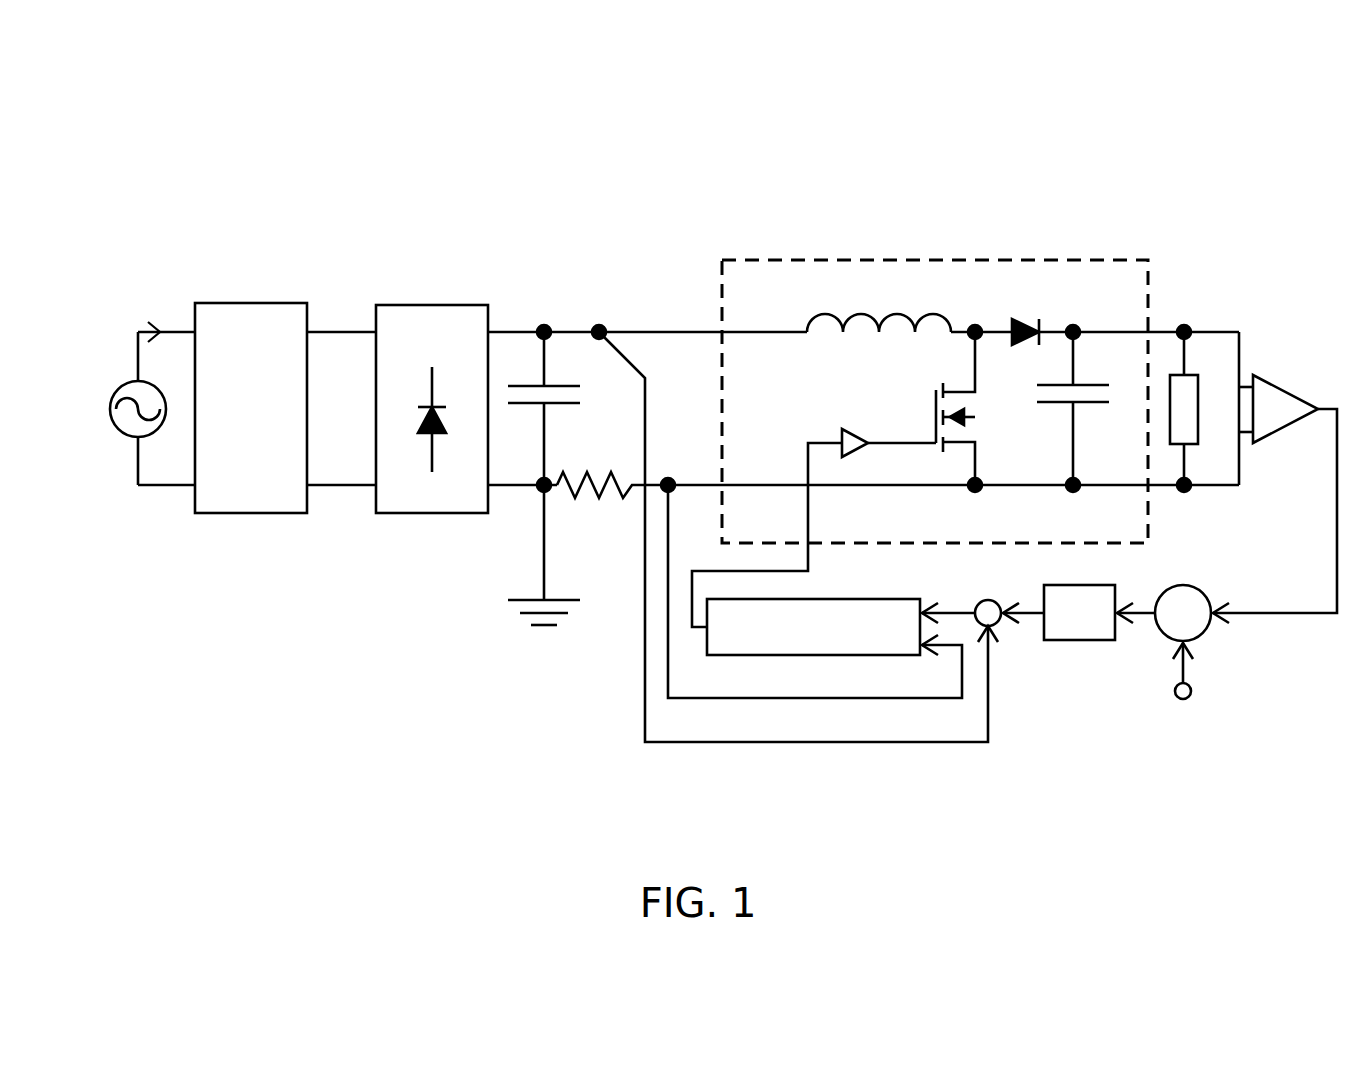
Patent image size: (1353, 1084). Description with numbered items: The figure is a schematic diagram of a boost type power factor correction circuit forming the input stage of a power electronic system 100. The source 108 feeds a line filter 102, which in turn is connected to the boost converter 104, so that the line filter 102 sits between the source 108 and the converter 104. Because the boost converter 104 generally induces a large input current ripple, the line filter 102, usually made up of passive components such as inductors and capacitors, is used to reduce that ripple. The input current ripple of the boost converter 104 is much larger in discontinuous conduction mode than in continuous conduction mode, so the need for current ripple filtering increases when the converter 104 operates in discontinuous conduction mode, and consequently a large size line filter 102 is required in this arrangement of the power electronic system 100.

The power electronic system 100 is at (1197, 185).
The line filter 102 is at (238, 303).
The boost converter 104 is at (933, 260).
The source 108 is at (122, 438).